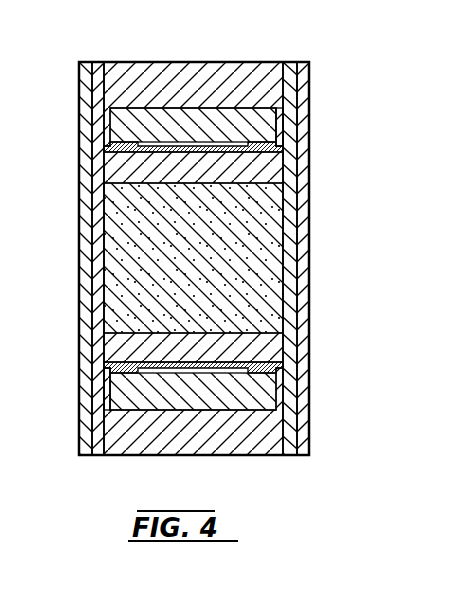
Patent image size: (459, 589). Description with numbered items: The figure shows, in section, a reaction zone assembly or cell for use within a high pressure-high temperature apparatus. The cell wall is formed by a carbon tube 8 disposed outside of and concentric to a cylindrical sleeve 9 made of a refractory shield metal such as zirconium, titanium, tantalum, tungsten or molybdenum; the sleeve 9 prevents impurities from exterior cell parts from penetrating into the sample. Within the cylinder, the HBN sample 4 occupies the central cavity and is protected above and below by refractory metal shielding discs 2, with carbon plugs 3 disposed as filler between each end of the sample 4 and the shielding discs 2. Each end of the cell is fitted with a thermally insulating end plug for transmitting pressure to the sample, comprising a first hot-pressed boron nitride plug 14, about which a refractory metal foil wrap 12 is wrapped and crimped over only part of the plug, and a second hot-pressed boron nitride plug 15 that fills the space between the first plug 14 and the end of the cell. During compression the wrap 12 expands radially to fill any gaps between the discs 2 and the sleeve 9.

The shielding disc 2 is at (120, 153).
The carbon plug 3 is at (270, 170).
The HBN sample 4 is at (130, 243).
The carbon tube 8 is at (302, 267).
The cylindrical sleeve 9 is at (290, 213).
The metal foil wrap 12 is at (277, 130).
The first hot-pressed boron nitride plug 14 is at (142, 123).
The second hot-pressed boron nitride plug 15 is at (200, 78).